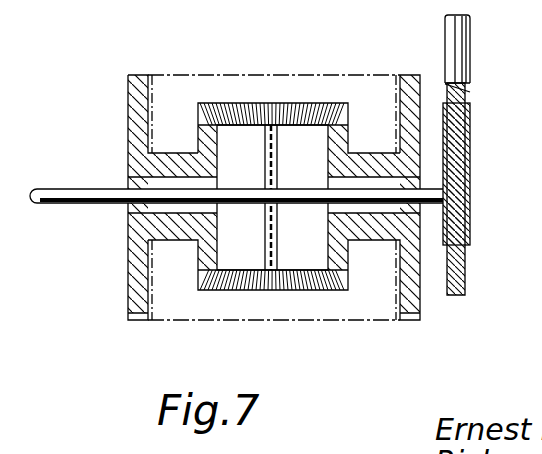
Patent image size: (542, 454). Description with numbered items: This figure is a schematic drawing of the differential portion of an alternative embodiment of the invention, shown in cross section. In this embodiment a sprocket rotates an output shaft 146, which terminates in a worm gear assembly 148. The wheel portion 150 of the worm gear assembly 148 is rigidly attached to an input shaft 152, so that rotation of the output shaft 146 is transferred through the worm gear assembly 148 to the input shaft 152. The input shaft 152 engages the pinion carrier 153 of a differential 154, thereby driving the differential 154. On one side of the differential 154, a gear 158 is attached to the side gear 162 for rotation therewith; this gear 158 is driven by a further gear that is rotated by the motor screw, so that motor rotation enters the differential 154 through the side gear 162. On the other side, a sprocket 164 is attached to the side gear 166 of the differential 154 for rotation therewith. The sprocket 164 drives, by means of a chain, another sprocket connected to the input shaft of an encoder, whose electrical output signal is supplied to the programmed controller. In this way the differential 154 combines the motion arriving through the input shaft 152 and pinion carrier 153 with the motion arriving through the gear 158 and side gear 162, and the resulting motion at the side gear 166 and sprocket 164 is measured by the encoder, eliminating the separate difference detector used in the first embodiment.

The output shaft 146 is at (450, 42).
The worm gear assembly 148 is at (478, 87).
The wheel portion 150 is at (470, 128).
The input shaft 152 is at (432, 193).
The pinion carrier 153 is at (267, 257).
The differential 154 is at (255, 55).
The gear 158 is at (127, 268).
The side gear 162 is at (198, 278).
The sprocket 164 is at (398, 292).
The side gear 166 is at (350, 118).